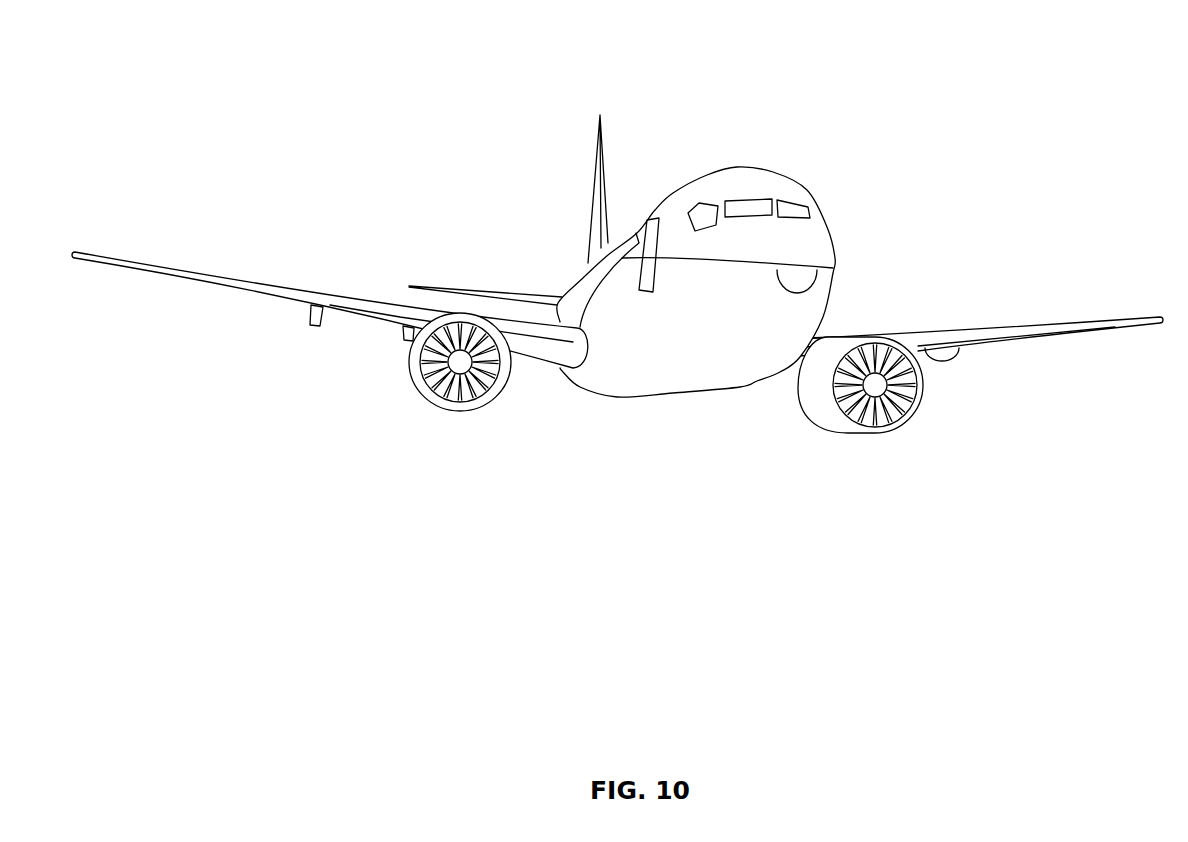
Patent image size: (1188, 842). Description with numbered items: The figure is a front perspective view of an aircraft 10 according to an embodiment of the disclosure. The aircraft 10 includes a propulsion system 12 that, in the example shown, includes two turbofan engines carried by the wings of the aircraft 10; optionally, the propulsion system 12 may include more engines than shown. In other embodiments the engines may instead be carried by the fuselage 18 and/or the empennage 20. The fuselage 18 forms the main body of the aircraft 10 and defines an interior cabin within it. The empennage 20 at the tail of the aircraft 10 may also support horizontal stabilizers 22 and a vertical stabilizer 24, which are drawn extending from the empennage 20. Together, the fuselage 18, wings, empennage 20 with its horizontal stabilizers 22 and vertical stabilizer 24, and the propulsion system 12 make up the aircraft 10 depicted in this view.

The aircraft 10 is at (348, 62).
The propulsion system 12 is at (964, 423).
The fuselage 18 is at (838, 233).
The empennage 20 is at (582, 267).
The horizontal stabilizers 22 is at (450, 290).
The vertical stabilizer 24 is at (597, 157).